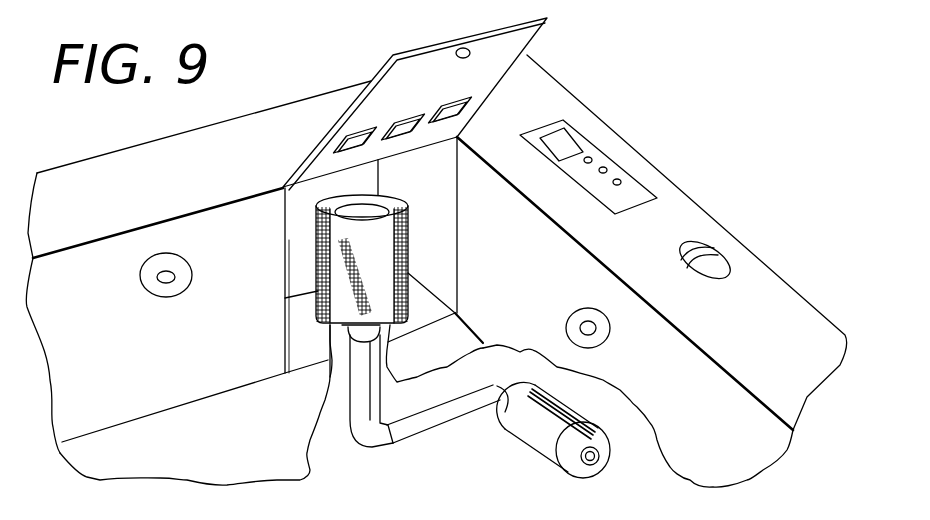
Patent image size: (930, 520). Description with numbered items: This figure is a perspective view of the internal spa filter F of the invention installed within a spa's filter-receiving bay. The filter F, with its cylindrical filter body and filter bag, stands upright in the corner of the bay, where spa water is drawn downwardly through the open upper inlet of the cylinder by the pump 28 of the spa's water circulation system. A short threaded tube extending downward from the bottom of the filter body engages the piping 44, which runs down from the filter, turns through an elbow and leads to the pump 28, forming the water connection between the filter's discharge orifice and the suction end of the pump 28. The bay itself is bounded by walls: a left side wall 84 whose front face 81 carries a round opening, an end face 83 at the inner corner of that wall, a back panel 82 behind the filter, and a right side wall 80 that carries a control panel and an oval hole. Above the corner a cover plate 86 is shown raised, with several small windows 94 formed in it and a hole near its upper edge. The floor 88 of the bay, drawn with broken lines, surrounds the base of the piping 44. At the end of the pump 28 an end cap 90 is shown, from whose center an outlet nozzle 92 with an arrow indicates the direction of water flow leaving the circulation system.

The windows in cover plate 94 is at (340, 137).
The cover plate 86 is at (533, 40).
The back panel of recess 82 is at (432, 162).
The internal spa filter F is at (409, 244).
The floor of recess 88 is at (523, 383).
The housing side wall with hole 80 is at (603, 340).
The end cap of fitting 90 is at (597, 433).
The outlet nozzle 92 is at (628, 486).
The pump 28 is at (532, 428).
The piping 44 is at (358, 440).
The end face of wall 83 is at (312, 352).
The left side wall 84 is at (72, 360).
The front face of wall 81 is at (195, 347).